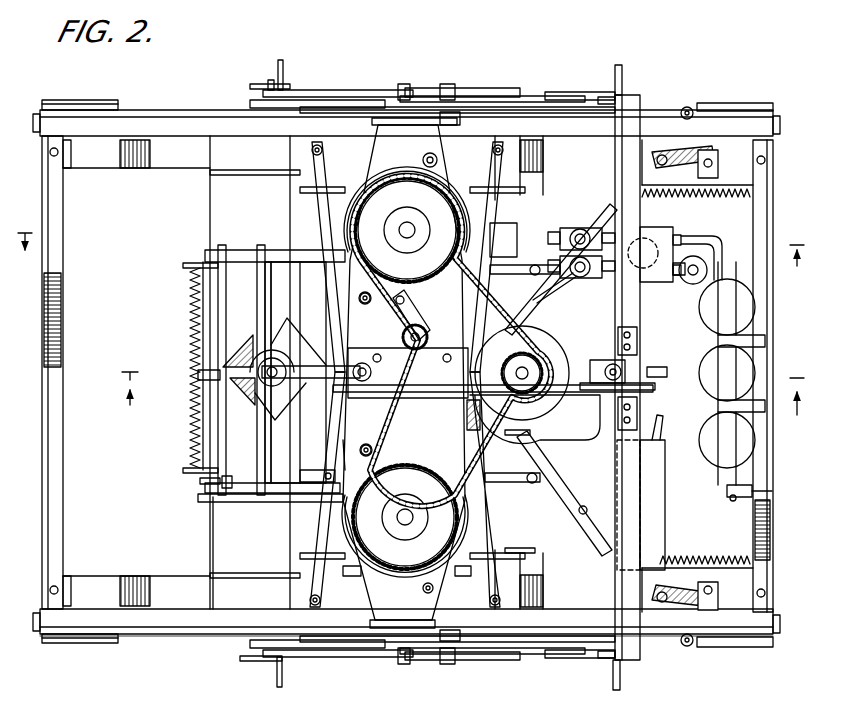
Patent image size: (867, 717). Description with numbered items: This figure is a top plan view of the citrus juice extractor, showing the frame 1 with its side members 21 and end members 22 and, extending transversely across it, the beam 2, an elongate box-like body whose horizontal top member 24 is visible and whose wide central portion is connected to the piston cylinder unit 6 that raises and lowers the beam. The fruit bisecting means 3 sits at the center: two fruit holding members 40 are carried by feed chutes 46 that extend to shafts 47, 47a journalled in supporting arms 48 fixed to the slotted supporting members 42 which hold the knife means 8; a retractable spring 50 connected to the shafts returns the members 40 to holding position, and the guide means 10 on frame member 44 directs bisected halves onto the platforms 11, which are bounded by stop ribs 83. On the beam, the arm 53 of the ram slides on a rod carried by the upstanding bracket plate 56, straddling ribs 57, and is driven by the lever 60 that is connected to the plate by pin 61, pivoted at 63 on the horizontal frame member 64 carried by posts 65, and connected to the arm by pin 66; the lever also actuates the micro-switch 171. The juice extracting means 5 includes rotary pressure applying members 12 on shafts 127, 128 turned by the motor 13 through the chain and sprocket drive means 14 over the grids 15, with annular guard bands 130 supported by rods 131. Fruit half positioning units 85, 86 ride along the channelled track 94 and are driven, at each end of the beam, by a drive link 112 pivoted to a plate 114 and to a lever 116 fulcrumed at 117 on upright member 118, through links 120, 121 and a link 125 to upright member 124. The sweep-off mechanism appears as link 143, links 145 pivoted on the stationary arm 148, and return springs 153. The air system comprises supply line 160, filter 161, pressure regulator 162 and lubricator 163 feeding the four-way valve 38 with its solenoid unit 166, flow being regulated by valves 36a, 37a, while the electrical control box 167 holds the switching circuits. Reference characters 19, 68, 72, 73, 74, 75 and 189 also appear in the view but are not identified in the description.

The frame assembly 1 is at (170, 640).
The beam assembly 2 is at (440, 160).
The fruit bisecting means 3 is at (190, 358).
The juice extracting means 5 is at (346, 190).
The piston cylinder unit 6 is at (463, 406).
The knife means 8 is at (240, 390).
The guide means 10 is at (246, 345).
The platforms 11 is at (212, 197).
The rotary pressure applying members 12 is at (436, 498).
The motor 13 is at (577, 428).
The drive means 14 is at (395, 449).
The grids 15 is at (340, 160).
The rail 19 is at (482, 94).
The side members 21 is at (147, 163).
The end members 22 is at (58, 480).
The top member 24 is at (385, 606).
The valve 36a is at (556, 288).
The valve 37a is at (580, 228).
The four-way valve 38 is at (672, 233).
The fruit holding members 40 is at (292, 358).
The slotted supporting members 42 is at (200, 386).
The frame member 44 is at (210, 513).
The feed chutes 46 is at (292, 320).
The shaft 47 is at (240, 250).
The shaft 47a is at (240, 502).
The supporting arms 48 is at (200, 272).
The retractable spring 50 is at (195, 316).
The arm 53 is at (330, 368).
The bracket plate 56 is at (432, 370).
The ribs 57 is at (385, 393).
The lever 60 is at (536, 386).
The pin 61 is at (450, 402).
The pivot 63 is at (640, 410).
The horizontal frame member 64 is at (633, 321).
The posts 65 is at (622, 72).
The pin 66 is at (345, 396).
The guide bar 68 is at (263, 292).
The vertical bar 72 is at (262, 250).
The bracket 73 is at (222, 250).
The pin 74 is at (215, 472).
The stop 75 is at (227, 478).
The stop ribs 83 is at (220, 173).
The positioning unit 85 is at (528, 226).
The positioning unit 86 is at (530, 526).
The channelled track 94 is at (160, 111).
The drive link 112 is at (460, 128).
The plate 114 is at (417, 132).
The lever 116 is at (526, 107).
The fulcrum 117 is at (638, 100).
The upright member 118 is at (592, 94).
The link 120 is at (300, 112).
The link 121 is at (450, 80).
The upright member 124 is at (286, 68).
The link 125 is at (330, 92).
The shaft 127 is at (409, 228).
The shaft 128 is at (407, 515).
The annular guard bands 130 is at (362, 573).
The rods 131 is at (392, 303).
The link 143 is at (606, 203).
The link 145 is at (688, 106).
The stationary arm 148 is at (702, 150).
The springs 153 is at (718, 194).
The compressed air supply line 160 is at (742, 477).
The filter 161 is at (714, 455).
The pressure regulator 162 is at (712, 397).
The lubricator 163 is at (712, 320).
The solenoid unit 166 is at (648, 242).
The electrical control box 167 is at (662, 516).
The micro-switch 171 is at (560, 342).
The fitting 189 is at (690, 282).